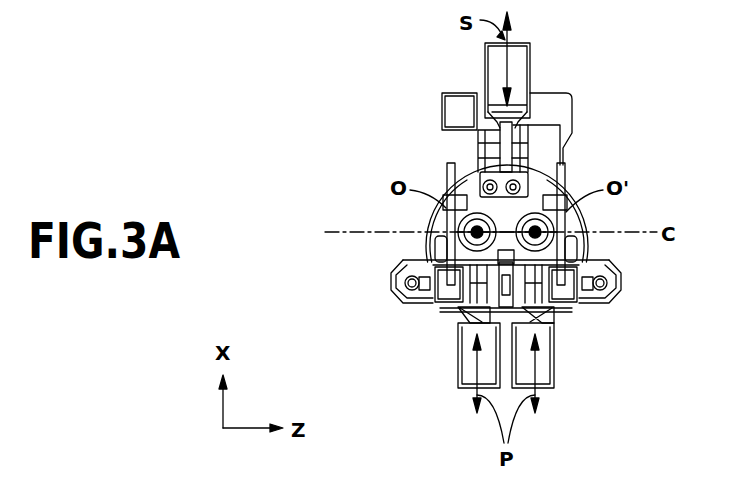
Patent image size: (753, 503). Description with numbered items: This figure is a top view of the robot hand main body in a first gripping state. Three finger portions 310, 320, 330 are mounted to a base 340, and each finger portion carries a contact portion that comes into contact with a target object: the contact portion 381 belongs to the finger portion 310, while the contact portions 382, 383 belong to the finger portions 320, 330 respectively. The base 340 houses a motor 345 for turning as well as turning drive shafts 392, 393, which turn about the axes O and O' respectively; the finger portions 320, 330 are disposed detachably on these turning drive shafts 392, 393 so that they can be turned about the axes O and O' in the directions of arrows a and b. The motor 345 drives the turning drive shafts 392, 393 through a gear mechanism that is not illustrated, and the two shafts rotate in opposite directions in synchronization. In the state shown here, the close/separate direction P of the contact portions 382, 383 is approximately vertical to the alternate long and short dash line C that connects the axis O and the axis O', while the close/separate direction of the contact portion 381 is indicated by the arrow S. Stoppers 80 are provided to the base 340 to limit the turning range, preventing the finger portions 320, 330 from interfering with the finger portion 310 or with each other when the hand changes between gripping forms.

The finger portion 310 is at (427, 45).
The contact portion 381 is at (492, 100).
The stopper 80 is at (512, 258).
The motor 345 is at (448, 172).
The base 340 is at (418, 222).
The turning drive shaft 393 is at (437, 242).
The turning drive shaft 392 is at (560, 238).
The finger portion 330 is at (378, 268).
The finger portion 320 is at (640, 268).
The contact portion 383 is at (478, 318).
The contact portion 382 is at (538, 318).